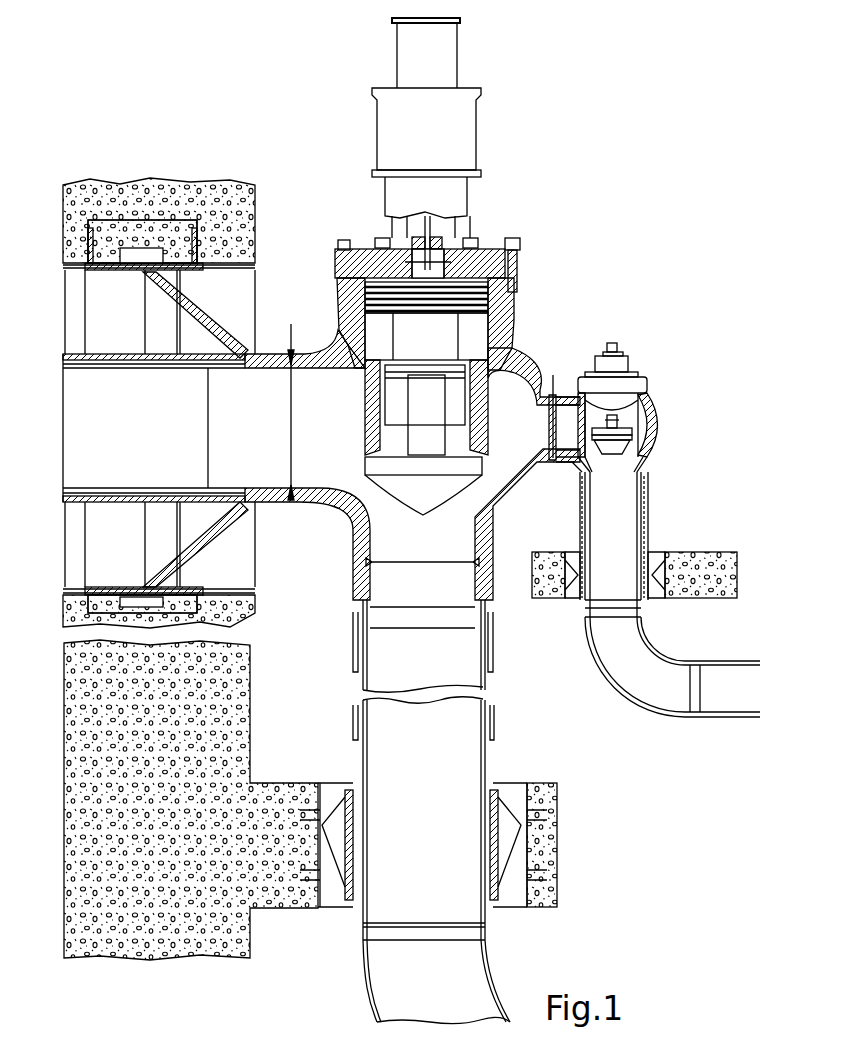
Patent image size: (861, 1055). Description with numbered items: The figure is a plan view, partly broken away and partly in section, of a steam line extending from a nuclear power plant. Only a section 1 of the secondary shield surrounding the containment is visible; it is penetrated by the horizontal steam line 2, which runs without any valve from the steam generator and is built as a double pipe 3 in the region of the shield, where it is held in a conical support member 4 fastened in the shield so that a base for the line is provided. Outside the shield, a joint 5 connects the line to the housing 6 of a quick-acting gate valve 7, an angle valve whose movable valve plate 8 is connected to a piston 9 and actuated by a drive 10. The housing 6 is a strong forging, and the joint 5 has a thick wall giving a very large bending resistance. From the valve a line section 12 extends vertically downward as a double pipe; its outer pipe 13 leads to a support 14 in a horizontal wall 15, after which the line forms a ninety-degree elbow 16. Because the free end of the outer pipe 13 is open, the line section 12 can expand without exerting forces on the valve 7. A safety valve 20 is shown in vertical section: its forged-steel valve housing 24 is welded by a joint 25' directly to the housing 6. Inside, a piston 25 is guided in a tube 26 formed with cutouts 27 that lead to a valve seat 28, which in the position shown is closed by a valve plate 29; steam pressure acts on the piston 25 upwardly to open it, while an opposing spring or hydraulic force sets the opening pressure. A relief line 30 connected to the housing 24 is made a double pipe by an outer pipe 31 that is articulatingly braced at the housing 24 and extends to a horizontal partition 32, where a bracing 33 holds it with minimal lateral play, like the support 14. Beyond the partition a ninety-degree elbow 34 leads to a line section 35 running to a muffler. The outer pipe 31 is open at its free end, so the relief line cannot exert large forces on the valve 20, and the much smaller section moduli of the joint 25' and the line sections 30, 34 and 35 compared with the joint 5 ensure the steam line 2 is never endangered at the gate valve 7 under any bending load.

The secondary shield section 1 is at (152, 190).
The steam line 2 is at (135, 371).
The double pipe 3 is at (108, 354).
The conical support member 4 is at (219, 323).
The joint 5 is at (291, 399).
The housing 6 is at (521, 376).
The quick-acting gate valve 7 is at (519, 291).
The valve plate 8 is at (452, 484).
The piston 9 is at (452, 316).
The drive 10 is at (456, 203).
The line section 12 is at (492, 742).
The outer pipe 13 is at (494, 664).
The support 14 is at (500, 795).
The horizontal wall 15 is at (548, 908).
The elbow 16 is at (494, 986).
The safety valve 20 is at (708, 406).
The valve housing 24 is at (653, 440).
The piston 25 is at (643, 428).
The joint 25' is at (559, 409).
The tube 26 is at (650, 405).
The cutouts 27 is at (572, 463).
The valve seat 28 is at (648, 493).
The valve plate 29 is at (625, 456).
The relief line 30 is at (650, 531).
The outer pipe 31 is at (580, 531).
The horizontal partition 32 is at (716, 552).
The bracing 33 is at (652, 600).
The elbow 34 is at (625, 705).
The line section 35 is at (727, 663).